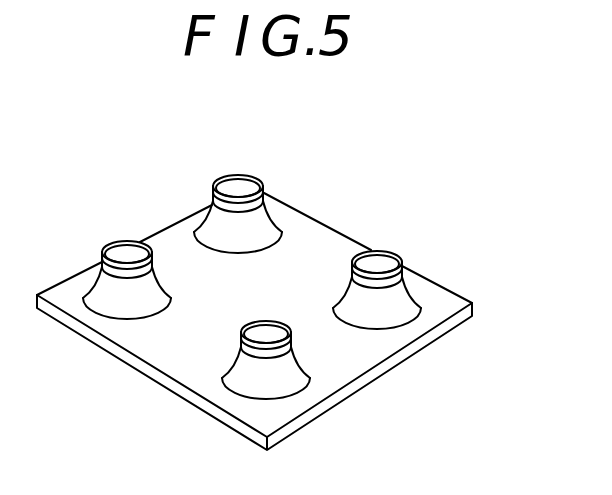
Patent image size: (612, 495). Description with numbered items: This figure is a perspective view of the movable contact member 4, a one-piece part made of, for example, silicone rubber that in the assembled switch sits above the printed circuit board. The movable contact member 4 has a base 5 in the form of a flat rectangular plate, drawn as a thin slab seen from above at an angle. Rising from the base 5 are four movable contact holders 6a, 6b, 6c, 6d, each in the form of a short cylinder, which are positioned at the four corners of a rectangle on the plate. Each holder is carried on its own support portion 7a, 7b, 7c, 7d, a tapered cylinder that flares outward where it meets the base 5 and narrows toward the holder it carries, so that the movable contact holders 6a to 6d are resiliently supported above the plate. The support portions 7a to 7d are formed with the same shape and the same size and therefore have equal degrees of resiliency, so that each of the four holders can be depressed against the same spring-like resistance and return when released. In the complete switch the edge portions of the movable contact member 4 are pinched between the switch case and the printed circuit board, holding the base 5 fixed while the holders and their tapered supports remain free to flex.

The movable contact member 4 is at (354, 186).
The base 5 is at (448, 303).
The movable contact holder 6a is at (267, 336).
The movable contact holder 6b is at (383, 264).
The movable contact holder 6c is at (127, 252).
The movable contact holder 6d is at (245, 190).
The support portion 7a is at (242, 369).
The support portion 7b is at (356, 296).
The support portion 7c is at (101, 289).
The support portion 7d is at (212, 223).